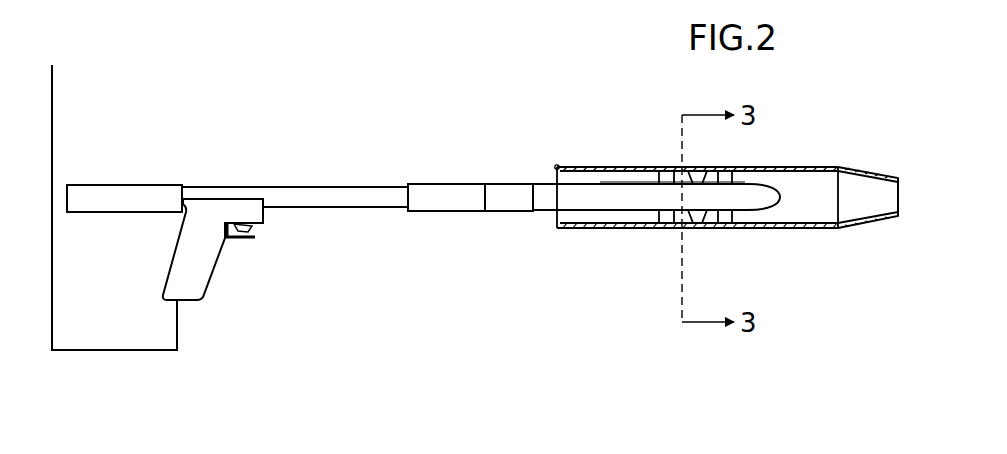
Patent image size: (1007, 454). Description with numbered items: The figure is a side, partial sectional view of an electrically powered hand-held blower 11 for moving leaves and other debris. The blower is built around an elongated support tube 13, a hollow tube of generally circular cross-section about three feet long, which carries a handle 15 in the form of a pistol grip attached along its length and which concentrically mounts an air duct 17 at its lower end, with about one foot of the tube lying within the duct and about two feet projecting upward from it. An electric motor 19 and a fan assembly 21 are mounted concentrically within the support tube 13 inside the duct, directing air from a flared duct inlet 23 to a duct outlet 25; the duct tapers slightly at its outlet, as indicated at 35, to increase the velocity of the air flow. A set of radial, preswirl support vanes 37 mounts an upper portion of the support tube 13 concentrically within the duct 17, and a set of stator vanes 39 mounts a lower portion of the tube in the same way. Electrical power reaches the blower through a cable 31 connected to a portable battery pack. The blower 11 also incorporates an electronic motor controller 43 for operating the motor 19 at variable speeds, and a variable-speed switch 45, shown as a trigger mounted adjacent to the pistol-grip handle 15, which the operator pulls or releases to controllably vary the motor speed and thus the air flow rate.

The hand-held blower 11 is at (417, 300).
The support tube 13 is at (423, 184).
The handle 15 is at (213, 277).
The air duct 17 is at (818, 166).
The electric motor 19 is at (656, 186).
The fan assembly 21 is at (694, 230).
The duct inlet 23 is at (557, 172).
The duct outlet 25 is at (898, 197).
The cable 31 is at (53, 277).
The taper 35 is at (846, 168).
The preswirl support vanes 37 is at (662, 225).
The stator vanes 39 is at (733, 222).
The electronic motor controller 43 is at (512, 184).
The variable-speed switch 45 is at (256, 229).